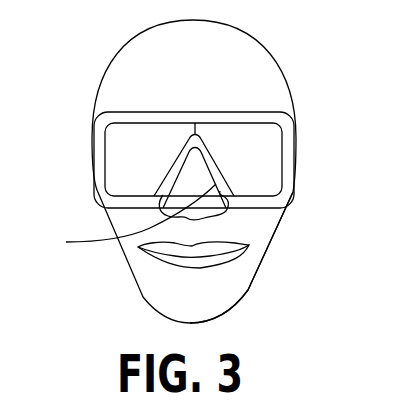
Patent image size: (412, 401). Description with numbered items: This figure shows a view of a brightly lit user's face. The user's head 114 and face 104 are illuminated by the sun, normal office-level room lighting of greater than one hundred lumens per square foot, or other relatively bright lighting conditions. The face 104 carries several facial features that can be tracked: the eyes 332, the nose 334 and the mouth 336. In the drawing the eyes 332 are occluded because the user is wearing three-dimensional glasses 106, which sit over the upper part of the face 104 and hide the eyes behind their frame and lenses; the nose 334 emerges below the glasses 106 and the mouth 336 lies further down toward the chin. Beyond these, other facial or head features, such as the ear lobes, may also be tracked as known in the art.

The face 104 is at (251, 248).
The 3-D glasses 106 is at (296, 151).
The user's head 114 is at (254, 42).
The eyes 332 is at (128, 205).
The nose 334 is at (197, 224).
The mouth 336 is at (160, 267).